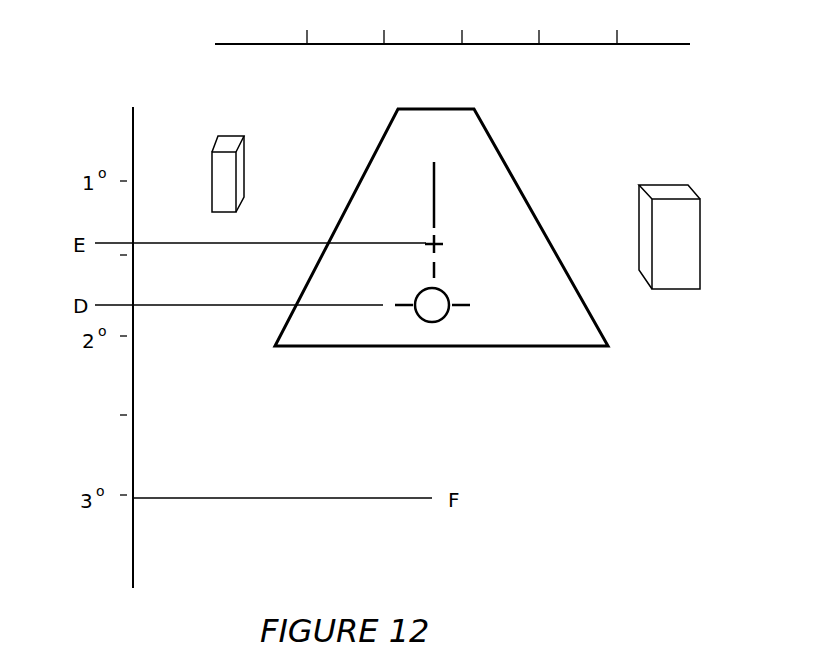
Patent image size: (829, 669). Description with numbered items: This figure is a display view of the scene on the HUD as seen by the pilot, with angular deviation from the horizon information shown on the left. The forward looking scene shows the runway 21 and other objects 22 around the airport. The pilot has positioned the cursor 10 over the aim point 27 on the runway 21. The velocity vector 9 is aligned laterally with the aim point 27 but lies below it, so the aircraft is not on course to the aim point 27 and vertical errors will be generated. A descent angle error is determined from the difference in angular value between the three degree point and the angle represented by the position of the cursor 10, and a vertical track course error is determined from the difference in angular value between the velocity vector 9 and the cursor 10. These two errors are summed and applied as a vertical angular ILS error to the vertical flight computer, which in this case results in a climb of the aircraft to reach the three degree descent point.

The velocity vector 9 is at (430, 324).
The cursor 10 is at (438, 226).
The runway 21 is at (505, 155).
The other objects 22 is at (245, 156).
The aim point 27 is at (437, 257).